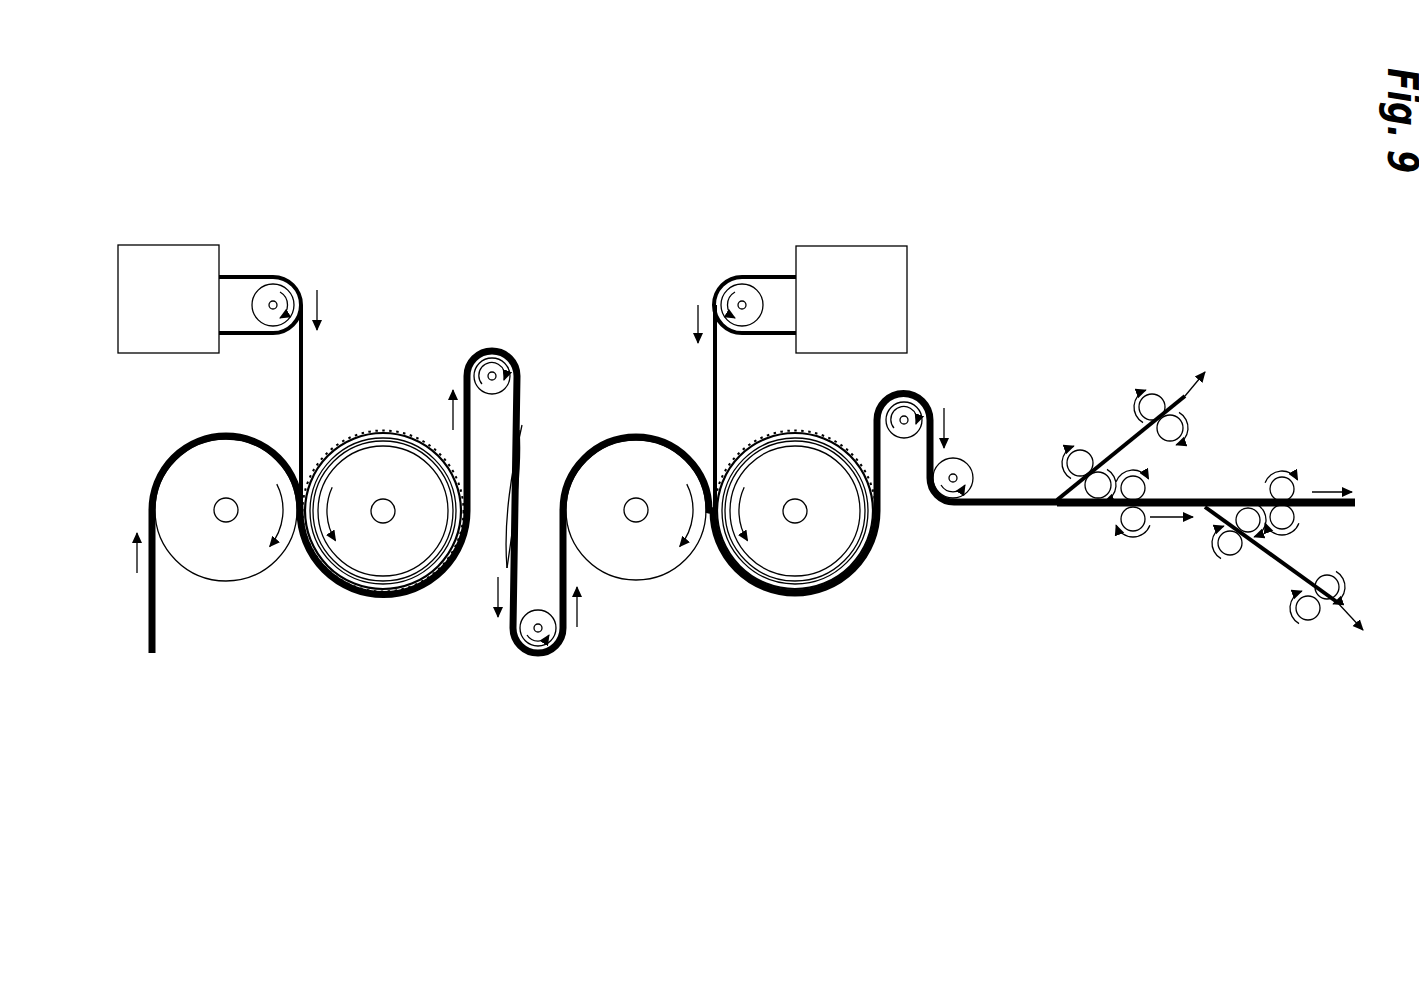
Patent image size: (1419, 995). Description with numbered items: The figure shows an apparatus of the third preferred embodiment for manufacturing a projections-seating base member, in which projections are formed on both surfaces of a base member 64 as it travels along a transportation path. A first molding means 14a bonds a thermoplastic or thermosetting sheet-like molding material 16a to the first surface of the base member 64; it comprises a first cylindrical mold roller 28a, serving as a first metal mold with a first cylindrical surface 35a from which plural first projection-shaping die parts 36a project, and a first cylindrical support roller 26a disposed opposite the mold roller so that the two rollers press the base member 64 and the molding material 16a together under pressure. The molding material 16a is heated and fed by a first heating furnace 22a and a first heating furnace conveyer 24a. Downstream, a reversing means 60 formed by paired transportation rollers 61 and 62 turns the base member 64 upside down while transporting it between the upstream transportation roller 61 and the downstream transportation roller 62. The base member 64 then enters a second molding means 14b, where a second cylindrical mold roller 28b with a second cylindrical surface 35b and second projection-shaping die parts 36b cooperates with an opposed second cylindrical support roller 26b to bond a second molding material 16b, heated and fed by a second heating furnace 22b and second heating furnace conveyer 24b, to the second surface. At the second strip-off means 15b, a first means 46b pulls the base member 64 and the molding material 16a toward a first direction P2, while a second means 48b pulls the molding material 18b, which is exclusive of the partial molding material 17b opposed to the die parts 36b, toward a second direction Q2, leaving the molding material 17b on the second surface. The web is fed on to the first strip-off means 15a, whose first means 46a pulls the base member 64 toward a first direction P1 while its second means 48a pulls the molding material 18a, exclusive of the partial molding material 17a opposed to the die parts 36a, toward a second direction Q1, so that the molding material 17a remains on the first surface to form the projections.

The first molding means 14a is at (309, 493).
The second molding means 14b is at (763, 547).
The first strip-off means 15a is at (1266, 602).
The second strip-off means 15b is at (1098, 399).
The molding material 16a is at (304, 370).
The molding material 16b is at (713, 364).
The molding material 17a is at (1302, 535).
The molding material 17b is at (1181, 458).
The molding material 18a is at (1288, 578).
The molding material 18b is at (1130, 437).
The first heating furnace 22a is at (155, 277).
The second heating furnace 22b is at (862, 272).
The first heating furnace conveyer 24a is at (237, 333).
The second heating furnace conveyer 24b is at (770, 333).
The first cylindrical support roller 26a is at (238, 568).
The second cylindrical support roller 26b is at (640, 568).
The first cylindrical mold roller 28a is at (420, 430).
The second cylindrical mold roller 28b is at (832, 432).
The first cylindrical surface 35a is at (384, 433).
The second cylindrical surface 35b is at (847, 447).
The first projection-shaping die parts 36a is at (357, 437).
The second projection-shaping die parts 36b is at (740, 452).
The first means 46a is at (1293, 487).
The first means 46b is at (1133, 503).
The second means 48a is at (1227, 563).
The second means 48b is at (1153, 394).
The reversing means 60 is at (536, 467).
The transportation roller 61 is at (492, 395).
The transportation roller 62 is at (537, 611).
The base member 64 is at (150, 632).
The first direction P1 is at (1332, 477).
The first direction P2 is at (1173, 536).
The second direction Q1 is at (1368, 614).
The second direction Q2 is at (1197, 371).